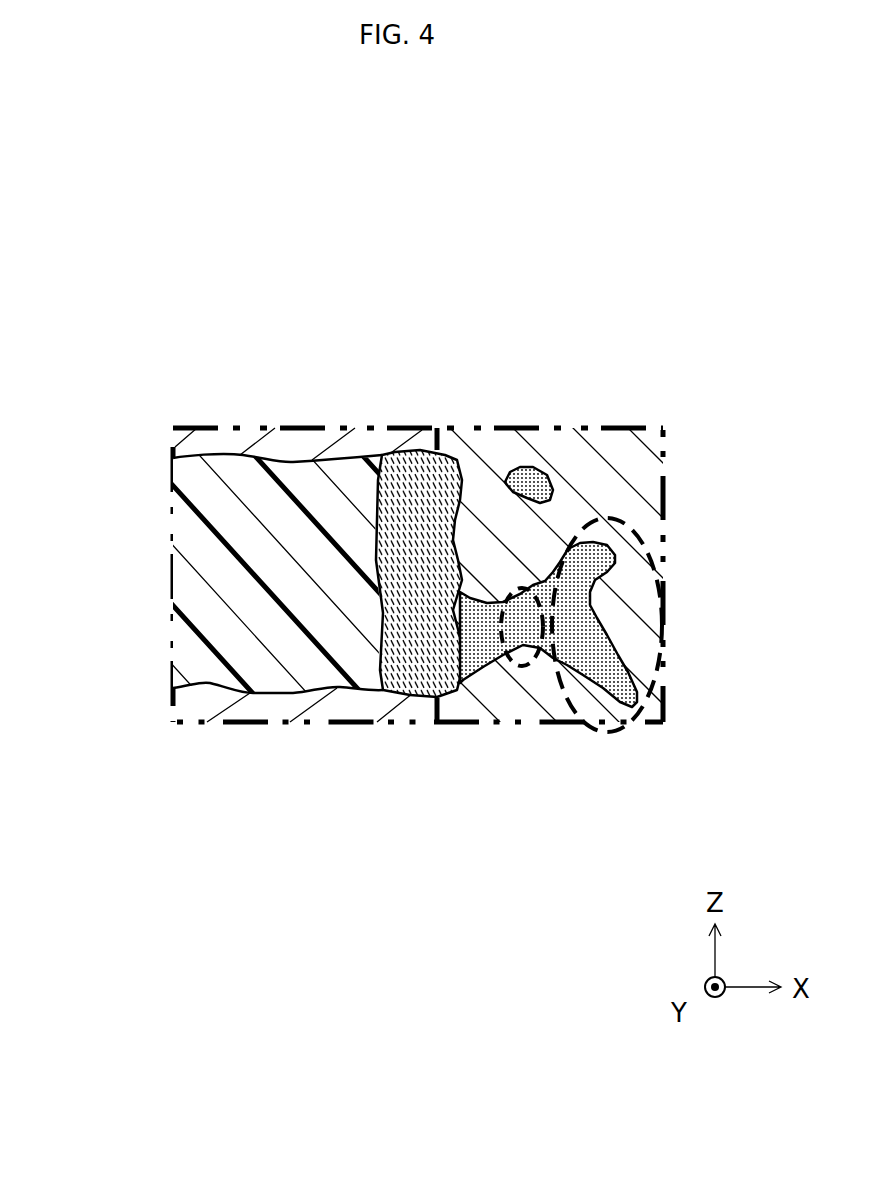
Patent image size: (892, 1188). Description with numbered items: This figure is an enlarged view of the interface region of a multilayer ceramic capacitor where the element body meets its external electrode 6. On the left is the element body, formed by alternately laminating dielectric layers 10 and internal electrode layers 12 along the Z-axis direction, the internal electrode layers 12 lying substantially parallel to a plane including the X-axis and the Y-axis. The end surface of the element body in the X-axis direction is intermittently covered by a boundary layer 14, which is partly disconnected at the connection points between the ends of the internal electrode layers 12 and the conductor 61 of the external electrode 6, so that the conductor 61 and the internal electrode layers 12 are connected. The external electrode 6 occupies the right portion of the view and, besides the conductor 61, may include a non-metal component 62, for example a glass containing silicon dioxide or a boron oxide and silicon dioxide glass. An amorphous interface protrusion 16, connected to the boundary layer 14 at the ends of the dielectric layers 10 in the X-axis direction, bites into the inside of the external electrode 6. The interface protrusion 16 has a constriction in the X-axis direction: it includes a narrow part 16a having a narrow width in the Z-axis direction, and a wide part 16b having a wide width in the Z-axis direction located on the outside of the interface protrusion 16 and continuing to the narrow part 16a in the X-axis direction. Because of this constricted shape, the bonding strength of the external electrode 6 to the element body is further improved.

The dielectric layer 10 is at (202, 595).
The internal electrode layer 12 is at (208, 443).
The boundary layer 14 is at (423, 483).
The interface protrusion 16 is at (485, 645).
The narrow part 16a is at (527, 668).
The wide part 16b is at (648, 712).
The external electrode 6 is at (592, 482).
The conductor 61 is at (620, 493).
The non-metal component 62 is at (527, 476).